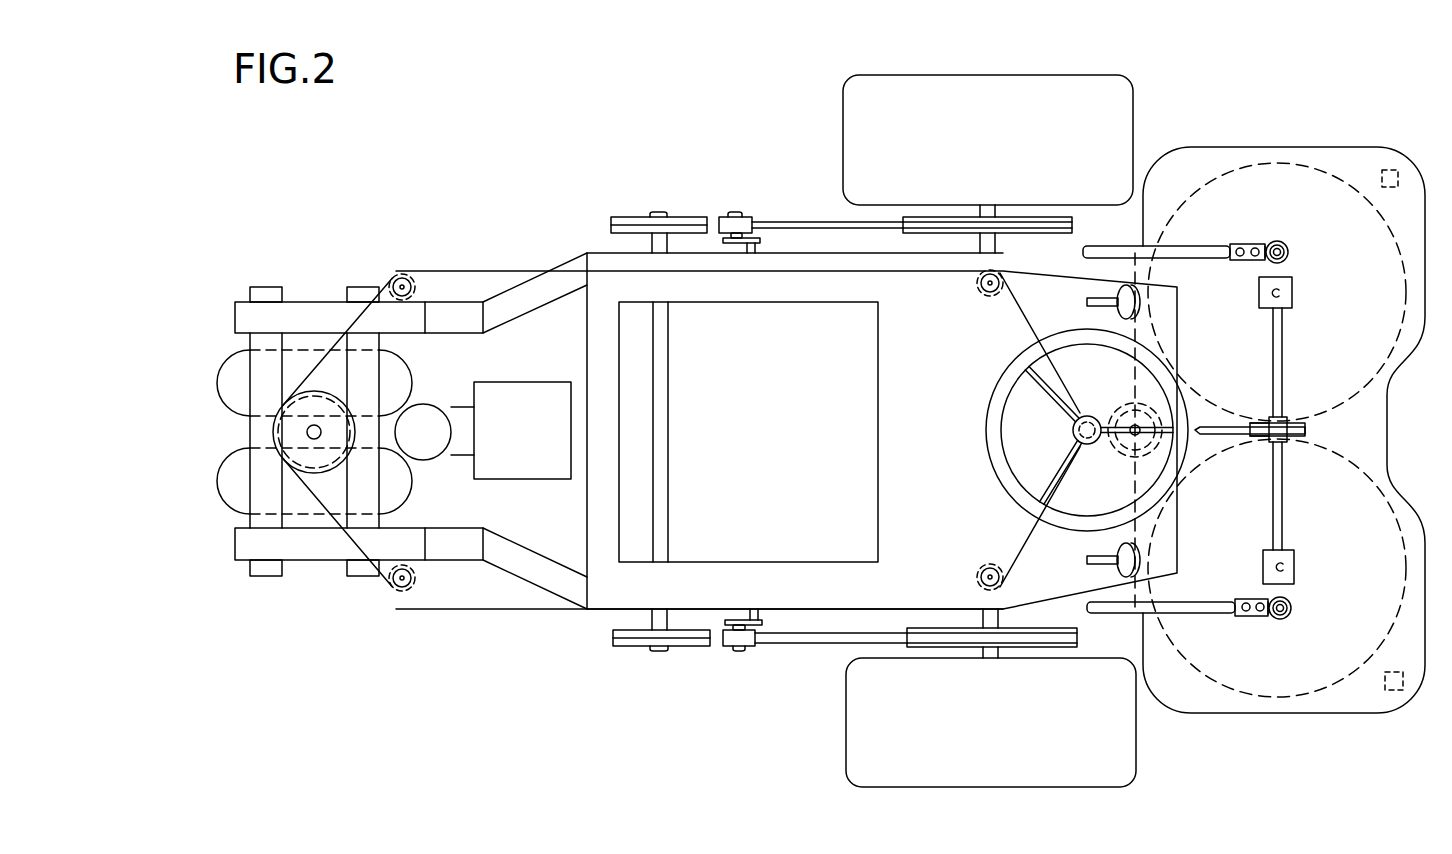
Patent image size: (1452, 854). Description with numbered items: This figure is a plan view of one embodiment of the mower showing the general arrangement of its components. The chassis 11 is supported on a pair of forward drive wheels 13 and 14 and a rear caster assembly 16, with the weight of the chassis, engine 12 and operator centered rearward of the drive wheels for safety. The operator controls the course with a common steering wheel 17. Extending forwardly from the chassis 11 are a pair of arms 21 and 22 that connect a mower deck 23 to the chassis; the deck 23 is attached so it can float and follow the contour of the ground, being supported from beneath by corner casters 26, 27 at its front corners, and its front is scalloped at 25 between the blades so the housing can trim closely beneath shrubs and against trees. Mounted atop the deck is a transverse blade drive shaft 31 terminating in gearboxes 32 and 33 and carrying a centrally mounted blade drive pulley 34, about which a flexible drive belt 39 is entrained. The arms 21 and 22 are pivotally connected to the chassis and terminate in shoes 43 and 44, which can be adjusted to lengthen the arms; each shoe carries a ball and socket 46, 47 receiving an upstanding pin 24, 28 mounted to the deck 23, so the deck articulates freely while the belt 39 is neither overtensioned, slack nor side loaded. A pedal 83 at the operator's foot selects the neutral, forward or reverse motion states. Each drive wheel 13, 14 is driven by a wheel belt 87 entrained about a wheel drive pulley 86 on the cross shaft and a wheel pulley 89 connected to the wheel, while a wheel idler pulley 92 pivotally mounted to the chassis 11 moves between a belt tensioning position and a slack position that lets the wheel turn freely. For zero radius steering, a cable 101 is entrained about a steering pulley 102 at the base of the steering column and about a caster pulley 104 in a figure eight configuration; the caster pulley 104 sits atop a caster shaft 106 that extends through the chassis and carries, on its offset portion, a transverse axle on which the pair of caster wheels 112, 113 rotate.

The chassis 11 is at (245, 320).
The engine 12 is at (530, 407).
The drive wheel 13 is at (885, 712).
The drive wheel 14 is at (873, 142).
The rear caster assembly 16 is at (222, 468).
The steering wheel 17 is at (988, 432).
The arm 21 is at (1150, 617).
The arm 22 is at (1152, 245).
The mower deck 23 is at (1347, 148).
The upstanding pin 24 is at (1292, 608).
The scalloped front 25 is at (1387, 430).
The corner caster 26 is at (1398, 697).
The corner caster 27 is at (1395, 166).
The upstanding pin 28 is at (1288, 253).
The blade drive shaft 31 is at (1278, 362).
The gearbox 32 is at (1295, 558).
The gearbox 33 is at (1288, 284).
The blade drive pulley 34 is at (1293, 442).
The flexible drive belt 39 is at (1237, 434).
The shoe 43 is at (1252, 617).
The shoe 44 is at (1248, 243).
The ball and socket 46 is at (1285, 617).
The ball and socket 47 is at (1283, 243).
The pedal 83 is at (1140, 312).
The wheel drive pulley 86 is at (630, 646).
The wheel belt 87 is at (633, 217).
The wheel pulley 89 is at (917, 233).
The wheel idler pulley 92 is at (725, 217).
The cable 101 is at (461, 270).
The steering pulley 102 is at (1120, 455).
The caster pulley 104 is at (310, 403).
The caster shaft 106 is at (313, 440).
The caster wheel 112 is at (227, 497).
The caster wheel 113 is at (230, 377).